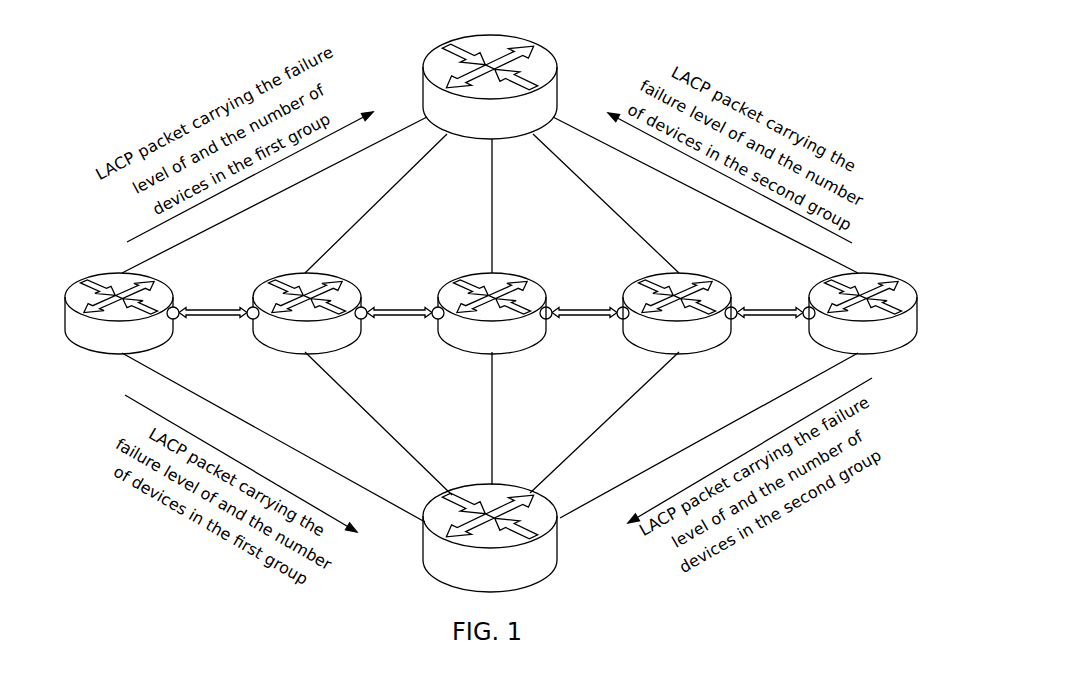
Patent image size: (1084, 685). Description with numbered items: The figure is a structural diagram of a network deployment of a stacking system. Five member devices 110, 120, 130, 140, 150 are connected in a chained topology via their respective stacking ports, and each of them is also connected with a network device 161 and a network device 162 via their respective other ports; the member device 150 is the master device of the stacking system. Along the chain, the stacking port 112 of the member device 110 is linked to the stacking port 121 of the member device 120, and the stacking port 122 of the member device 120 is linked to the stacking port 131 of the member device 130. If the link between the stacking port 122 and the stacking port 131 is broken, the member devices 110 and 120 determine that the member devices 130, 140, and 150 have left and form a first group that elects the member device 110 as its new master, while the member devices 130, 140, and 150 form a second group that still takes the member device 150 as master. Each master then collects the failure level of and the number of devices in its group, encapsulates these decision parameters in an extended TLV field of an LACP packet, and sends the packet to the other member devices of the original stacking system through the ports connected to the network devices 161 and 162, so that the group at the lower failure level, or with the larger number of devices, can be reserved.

The member device 110 is at (95, 275).
The stacking port 112 is at (175, 319).
The member device 120 is at (280, 352).
The stacking port 121 is at (249, 307).
The stacking port 122 is at (363, 320).
The member device 130 is at (532, 347).
The stacking port 131 is at (437, 307).
The member device 140 is at (700, 352).
The member device 150 is at (882, 274).
The network device 161 is at (557, 553).
The network device 162 is at (558, 73).